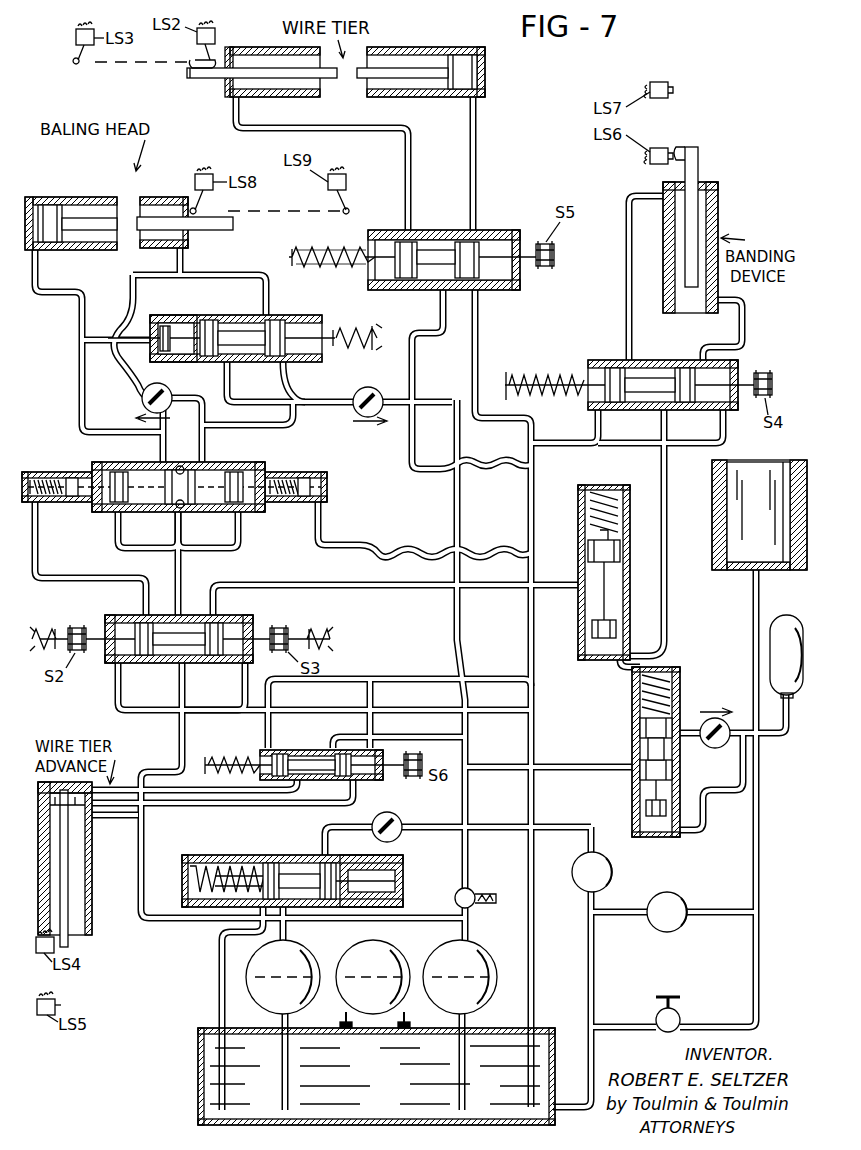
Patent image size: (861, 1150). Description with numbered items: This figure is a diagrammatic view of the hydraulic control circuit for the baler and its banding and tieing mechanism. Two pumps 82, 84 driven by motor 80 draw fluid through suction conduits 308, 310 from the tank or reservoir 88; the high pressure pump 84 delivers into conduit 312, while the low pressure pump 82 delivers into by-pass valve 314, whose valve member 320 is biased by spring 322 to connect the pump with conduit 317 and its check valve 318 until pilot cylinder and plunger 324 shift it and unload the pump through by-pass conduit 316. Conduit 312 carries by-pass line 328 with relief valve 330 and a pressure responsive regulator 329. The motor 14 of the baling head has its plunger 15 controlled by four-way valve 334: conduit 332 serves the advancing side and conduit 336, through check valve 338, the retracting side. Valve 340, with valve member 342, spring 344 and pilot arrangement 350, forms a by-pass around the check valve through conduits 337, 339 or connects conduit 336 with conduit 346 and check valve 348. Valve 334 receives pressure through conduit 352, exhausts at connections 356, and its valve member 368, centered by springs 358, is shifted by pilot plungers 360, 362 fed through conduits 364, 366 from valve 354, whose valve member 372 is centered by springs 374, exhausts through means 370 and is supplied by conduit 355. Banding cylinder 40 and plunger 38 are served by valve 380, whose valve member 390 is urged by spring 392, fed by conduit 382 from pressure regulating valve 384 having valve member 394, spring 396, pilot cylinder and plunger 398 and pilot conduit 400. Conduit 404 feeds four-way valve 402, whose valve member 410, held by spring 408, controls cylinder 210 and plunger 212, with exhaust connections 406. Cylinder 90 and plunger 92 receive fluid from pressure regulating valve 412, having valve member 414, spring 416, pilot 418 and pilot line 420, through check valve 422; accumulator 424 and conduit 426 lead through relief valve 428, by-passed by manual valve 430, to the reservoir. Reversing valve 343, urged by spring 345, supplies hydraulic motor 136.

The motor 14 is at (53, 197).
The plunger 15 is at (78, 222).
The plunger 212 is at (272, 73).
The cylinder 210 is at (380, 92).
The four-way valve 402 is at (452, 238).
The valve member 410 is at (437, 255).
The spring 408 is at (341, 251).
The exhaust connections 406 is at (430, 302).
The conduit 404 is at (416, 356).
The plunger 38 is at (698, 205).
The cylinder 40 is at (720, 235).
The conduit 337 is at (225, 272).
The conduit 336 is at (128, 318).
The pilot cylinder and plunger arrangement 350 is at (160, 330).
The valve 340 is at (221, 326).
The reciprocable valve member 342 is at (255, 330).
The spring 344 is at (356, 330).
The conduit 332 is at (79, 405).
The check valve 338 is at (167, 393).
The conduit 346 is at (302, 399).
The check valve 348 is at (368, 388).
The conduit 339 is at (288, 415).
The pilot plunger 360 is at (60, 487).
The four-way valve 334 is at (197, 498).
The centering springs 358 is at (282, 471).
The pilot plunger 362 is at (310, 482).
The exhaust connections 356 is at (117, 520).
The valve member 368 is at (197, 504).
The conduit 366 is at (319, 562).
The conduit 364 is at (33, 580).
The valve 354 is at (185, 627).
The valve member 372 is at (172, 633).
The centering springs 374 is at (45, 628).
The conduit 352 is at (347, 592).
The exhaust conduit means 370 is at (113, 678).
The conduit 355 is at (177, 727).
The spring 345 is at (221, 756).
The reversing valve 343 is at (293, 750).
The conduit 317 is at (392, 815).
The check valve 318 is at (402, 819).
The by-pass valve 314 is at (233, 857).
The valve member 320 is at (294, 867).
The spring 322 is at (188, 882).
The pilot cylinder and plunger 324 is at (405, 865).
The conduit 312 is at (461, 498).
The pressure responsive regulator 329 is at (470, 891).
The pump 82 is at (297, 952).
The motor 80 is at (380, 952).
The pump 84 is at (468, 952).
The suction conduit 308 is at (280, 1022).
The suction conduit 310 is at (406, 1026).
The by-pass conduit 316 is at (220, 973).
The tank or reservoir 88 is at (198, 1092).
The by-pass line 328 is at (590, 943).
The relief valve 330 is at (612, 868).
The pressure relief valve 428 is at (680, 900).
The manually controlled valve 430 is at (680, 1012).
The spring 392 is at (542, 370).
The valve member 390 is at (632, 385).
The valve 380 is at (637, 369).
The conduit 382 is at (668, 487).
The spring 396 is at (580, 491).
The pressure regulating valve 384 is at (582, 571).
The valve member 394 is at (586, 562).
The pilot conduit 400 is at (654, 607).
The pilot cylinder and plunger 398 is at (590, 637).
The pressure regulating valve 412 is at (653, 749).
The spring 416 is at (632, 681).
The valve member 414 is at (653, 743).
The check valve 422 is at (709, 720).
The pilot cylinder and plunger 418 is at (644, 808).
The pilot line 420 is at (700, 803).
The accumulator 424 is at (782, 624).
The conduit 426 is at (760, 783).
The plunger 92 is at (758, 470).
The hydraulic cylinder 90 is at (714, 544).
The hydraulic motor 136 is at (80, 932).